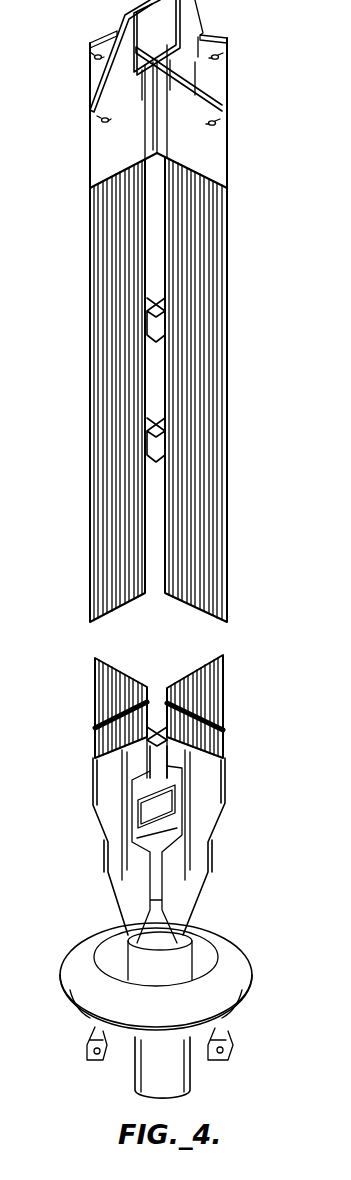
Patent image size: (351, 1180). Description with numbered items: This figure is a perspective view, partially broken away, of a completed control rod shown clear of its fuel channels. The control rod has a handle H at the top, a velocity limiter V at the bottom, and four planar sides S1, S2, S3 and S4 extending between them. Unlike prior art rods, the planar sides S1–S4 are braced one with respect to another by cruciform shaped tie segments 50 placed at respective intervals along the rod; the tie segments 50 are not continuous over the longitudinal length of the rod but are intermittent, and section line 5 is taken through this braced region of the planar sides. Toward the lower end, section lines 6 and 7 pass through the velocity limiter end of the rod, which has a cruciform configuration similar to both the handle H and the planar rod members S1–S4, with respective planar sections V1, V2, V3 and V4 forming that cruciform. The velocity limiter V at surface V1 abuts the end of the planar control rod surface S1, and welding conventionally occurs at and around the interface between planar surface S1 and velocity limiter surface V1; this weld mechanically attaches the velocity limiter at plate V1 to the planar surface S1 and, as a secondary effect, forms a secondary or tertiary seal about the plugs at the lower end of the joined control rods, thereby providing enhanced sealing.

The handle H is at (221, 42).
The planar side S1 is at (122, 418).
The planar side S2 is at (198, 397).
The cruciform shaped tie segments 50 is at (162, 324).
The section line 5— 5 is at (232, 398).
The planar side S3 is at (105, 686).
The planar side S4 is at (197, 676).
The planar section of velocity limiter V3 is at (107, 713).
The planar section of velocity limiter V4 is at (217, 703).
The section line 6— 6 is at (237, 652).
The section line 7— 7 is at (235, 702).
The planar section of velocity limiter V1 is at (120, 772).
The planar section of velocity limiter V2 is at (205, 788).
The velocity limiter V is at (252, 985).